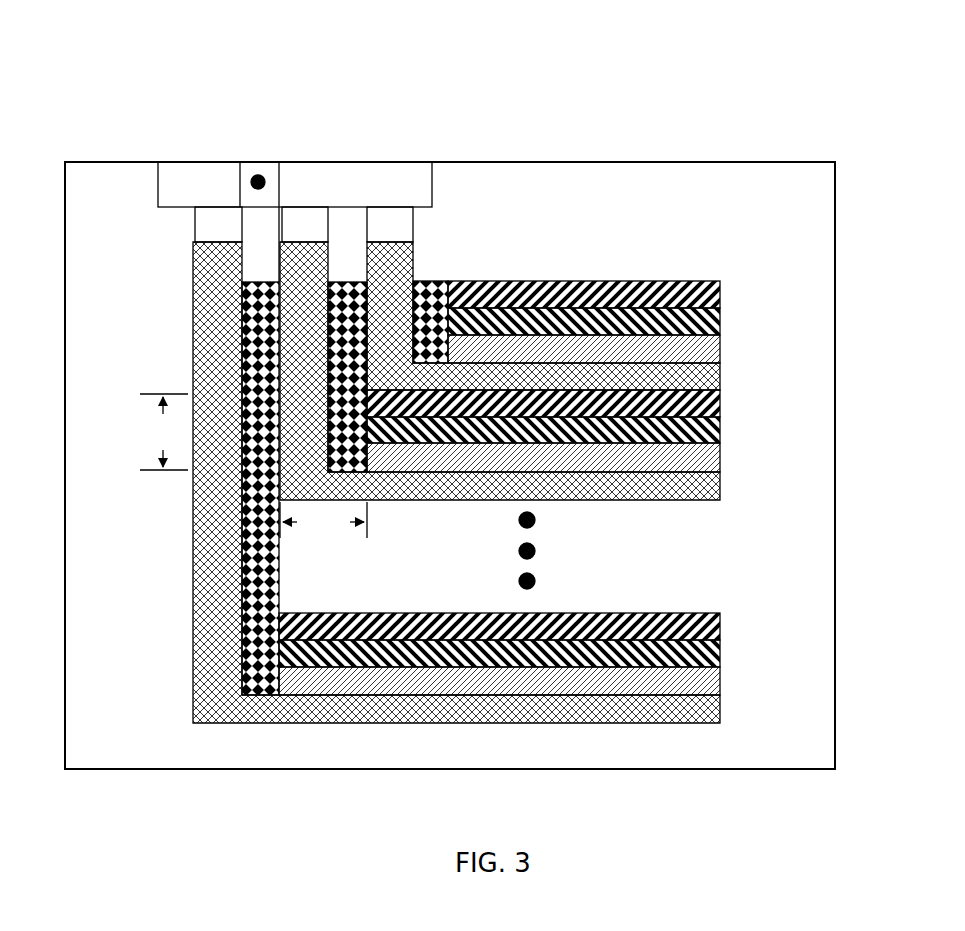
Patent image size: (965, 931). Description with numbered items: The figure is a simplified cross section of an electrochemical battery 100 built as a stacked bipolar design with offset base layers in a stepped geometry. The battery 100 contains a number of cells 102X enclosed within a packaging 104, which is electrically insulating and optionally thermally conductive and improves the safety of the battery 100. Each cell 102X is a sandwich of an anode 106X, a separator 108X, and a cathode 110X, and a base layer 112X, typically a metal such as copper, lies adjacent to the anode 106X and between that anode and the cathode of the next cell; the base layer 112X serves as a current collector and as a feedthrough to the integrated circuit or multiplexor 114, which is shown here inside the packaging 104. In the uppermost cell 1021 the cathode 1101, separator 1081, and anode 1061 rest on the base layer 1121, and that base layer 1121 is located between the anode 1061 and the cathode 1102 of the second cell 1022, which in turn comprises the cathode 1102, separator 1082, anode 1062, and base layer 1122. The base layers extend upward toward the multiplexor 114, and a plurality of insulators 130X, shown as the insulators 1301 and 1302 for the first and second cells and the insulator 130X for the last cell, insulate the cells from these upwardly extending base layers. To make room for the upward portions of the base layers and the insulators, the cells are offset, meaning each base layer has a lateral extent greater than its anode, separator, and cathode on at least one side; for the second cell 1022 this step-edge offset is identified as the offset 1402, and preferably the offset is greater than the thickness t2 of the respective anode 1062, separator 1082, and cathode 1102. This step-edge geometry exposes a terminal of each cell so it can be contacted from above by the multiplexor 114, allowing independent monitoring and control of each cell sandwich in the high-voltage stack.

The electrochemical battery 100 is at (829, 82).
The packaging 104 is at (828, 162).
The multiplexor 114 is at (432, 178).
The cell 1021 is at (636, 299).
The cell 1022 is at (592, 334).
The cell 102X is at (549, 482).
The cathode 1101 is at (720, 290).
The separator 1081 is at (720, 323).
The anode 1061 is at (720, 350).
The base layer 1121 is at (720, 377).
The cathode 1102 is at (720, 404).
The separator 1082 is at (720, 432).
The anode 1062 is at (720, 460).
The base layer 1122 is at (720, 487).
The cathode 110X is at (720, 618).
The separator 108X is at (720, 655).
The anode 106X is at (720, 683).
The base layer 112X is at (720, 710).
The insulator 1301 is at (430, 282).
The insulator 1302 is at (345, 282).
The insulator 130X is at (275, 612).
The offset 1402 is at (323, 520).
The thickness t2 is at (164, 432).